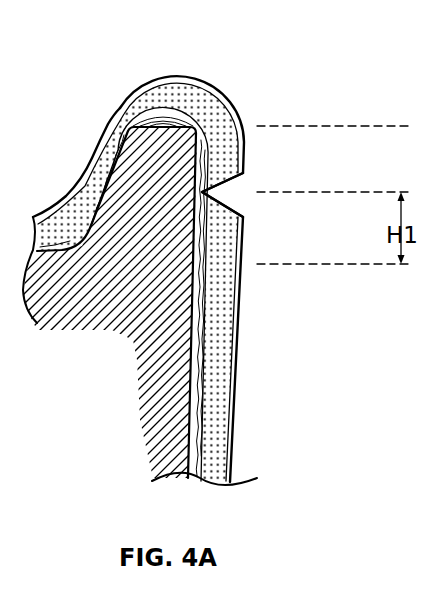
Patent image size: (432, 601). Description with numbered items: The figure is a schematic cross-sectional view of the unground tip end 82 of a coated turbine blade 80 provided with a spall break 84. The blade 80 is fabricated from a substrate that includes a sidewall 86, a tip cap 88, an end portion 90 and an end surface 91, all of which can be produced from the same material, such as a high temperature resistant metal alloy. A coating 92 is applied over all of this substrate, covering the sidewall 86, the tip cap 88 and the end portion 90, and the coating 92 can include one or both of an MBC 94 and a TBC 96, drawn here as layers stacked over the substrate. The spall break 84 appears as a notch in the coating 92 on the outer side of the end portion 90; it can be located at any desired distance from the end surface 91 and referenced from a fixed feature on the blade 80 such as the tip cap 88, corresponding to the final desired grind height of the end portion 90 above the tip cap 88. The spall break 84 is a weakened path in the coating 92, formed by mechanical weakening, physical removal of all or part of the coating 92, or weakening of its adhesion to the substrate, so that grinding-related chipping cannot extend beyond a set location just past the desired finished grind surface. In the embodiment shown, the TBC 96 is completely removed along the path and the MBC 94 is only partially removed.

The turbine blade 80 is at (262, 78).
The unground tip end 82 is at (96, 142).
The spall break 84 is at (246, 186).
The sidewall 86 is at (168, 333).
The tip cap 88 is at (48, 277).
The end portion 90 is at (157, 193).
The end surface 91 is at (163, 127).
The coating 92 is at (190, 80).
The MBC 94 is at (202, 405).
The TBC 96 is at (220, 368).